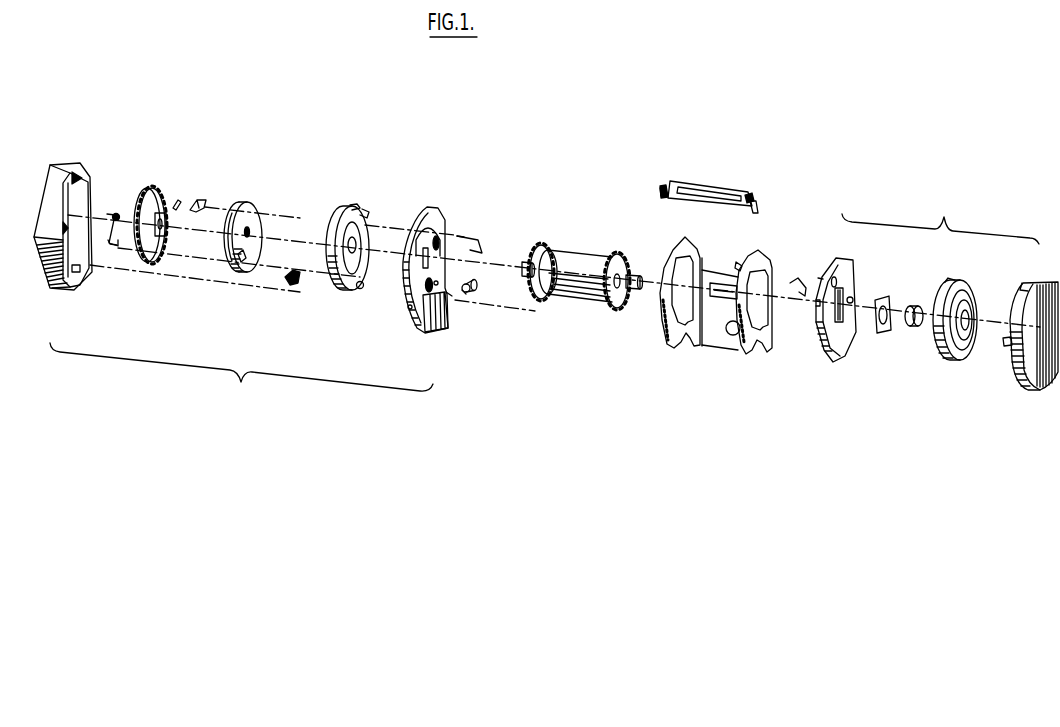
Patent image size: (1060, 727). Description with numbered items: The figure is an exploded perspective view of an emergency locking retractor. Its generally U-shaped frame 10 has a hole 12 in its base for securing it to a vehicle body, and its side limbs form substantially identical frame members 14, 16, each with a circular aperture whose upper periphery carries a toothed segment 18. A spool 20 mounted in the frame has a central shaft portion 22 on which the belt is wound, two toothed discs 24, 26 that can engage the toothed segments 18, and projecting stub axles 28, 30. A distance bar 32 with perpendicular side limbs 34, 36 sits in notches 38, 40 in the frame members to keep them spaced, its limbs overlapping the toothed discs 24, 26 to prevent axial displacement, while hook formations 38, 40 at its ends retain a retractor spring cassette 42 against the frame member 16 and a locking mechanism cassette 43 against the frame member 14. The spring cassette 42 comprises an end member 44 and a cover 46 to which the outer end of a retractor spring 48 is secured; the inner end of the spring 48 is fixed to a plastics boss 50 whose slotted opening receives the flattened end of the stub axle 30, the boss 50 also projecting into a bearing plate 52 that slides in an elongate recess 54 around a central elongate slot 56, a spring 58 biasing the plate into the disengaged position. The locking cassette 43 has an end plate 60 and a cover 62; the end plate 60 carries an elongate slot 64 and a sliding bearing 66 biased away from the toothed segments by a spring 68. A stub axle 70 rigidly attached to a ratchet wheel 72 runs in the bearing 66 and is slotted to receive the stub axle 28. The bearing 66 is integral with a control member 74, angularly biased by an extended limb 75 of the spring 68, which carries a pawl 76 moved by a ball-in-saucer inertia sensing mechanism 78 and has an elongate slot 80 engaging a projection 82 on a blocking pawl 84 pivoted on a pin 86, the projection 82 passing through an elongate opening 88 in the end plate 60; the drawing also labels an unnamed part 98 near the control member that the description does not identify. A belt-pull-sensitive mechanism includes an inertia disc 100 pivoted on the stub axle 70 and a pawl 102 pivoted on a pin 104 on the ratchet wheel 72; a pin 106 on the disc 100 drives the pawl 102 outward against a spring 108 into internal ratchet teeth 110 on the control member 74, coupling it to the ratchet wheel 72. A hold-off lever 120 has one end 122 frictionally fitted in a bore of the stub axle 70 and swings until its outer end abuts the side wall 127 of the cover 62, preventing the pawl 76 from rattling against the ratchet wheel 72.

The frame 10 is at (692, 267).
The hole 12 is at (730, 335).
The frame member 14 is at (719, 255).
The frame member 16 is at (750, 256).
The toothed segment 18 is at (691, 247).
The spool 20 is at (573, 284).
The central shaft portion 22 is at (565, 292).
The toothed disc 24 is at (541, 246).
The toothed disc 26 is at (619, 255).
The stub axle 28 is at (522, 262).
The stub axle 30 is at (630, 292).
The distance bar 32 is at (705, 182).
The side limb 34 is at (664, 196).
The side limb 36 is at (759, 206).
The notch / hook formation 38 is at (770, 183).
The notch / hook formation 40 is at (664, 185).
The retractor spring cassette 42 is at (940, 215).
The locking mechanism cassette 43 is at (241, 379).
The end member 44 is at (853, 315).
The cover 46 is at (1037, 384).
The retractor spring 48 is at (940, 354).
The plastics boss 50 is at (914, 305).
The bearing plate 52 is at (880, 334).
The elongate recess 54 is at (838, 282).
The elongate slot 56 is at (845, 300).
The spring 58 is at (800, 277).
The end plate 60 is at (409, 274).
The cover 62 is at (74, 161).
The elongate slot 64 is at (423, 260).
The sliding bearing 66 is at (367, 214).
The spring 68 is at (476, 239).
The stub axle 70 is at (153, 258).
The ratchet wheel 72 is at (145, 217).
The control member 74 is at (357, 249).
The extended limb 75 is at (457, 235).
The pawl 76 is at (290, 283).
The inertia sensing mechanism 78 is at (416, 345).
The elongate slot 80 is at (364, 289).
The projection 82 is at (470, 296).
The blocking pawl 84 is at (477, 287).
The pin 86 is at (452, 296).
The elongate opening 88 is at (415, 306).
The rim 98 is at (343, 292).
The inertia disc 100 is at (239, 268).
The pawl 102 is at (198, 200).
The pin 104 is at (155, 188).
The pin 106 is at (247, 204).
The spring 108 is at (176, 200).
The internal ratchet teeth 110 is at (356, 206).
The hold-off lever 120 is at (108, 250).
The end of hold-off lever 122 is at (112, 210).
The side wall 127 is at (86, 178).